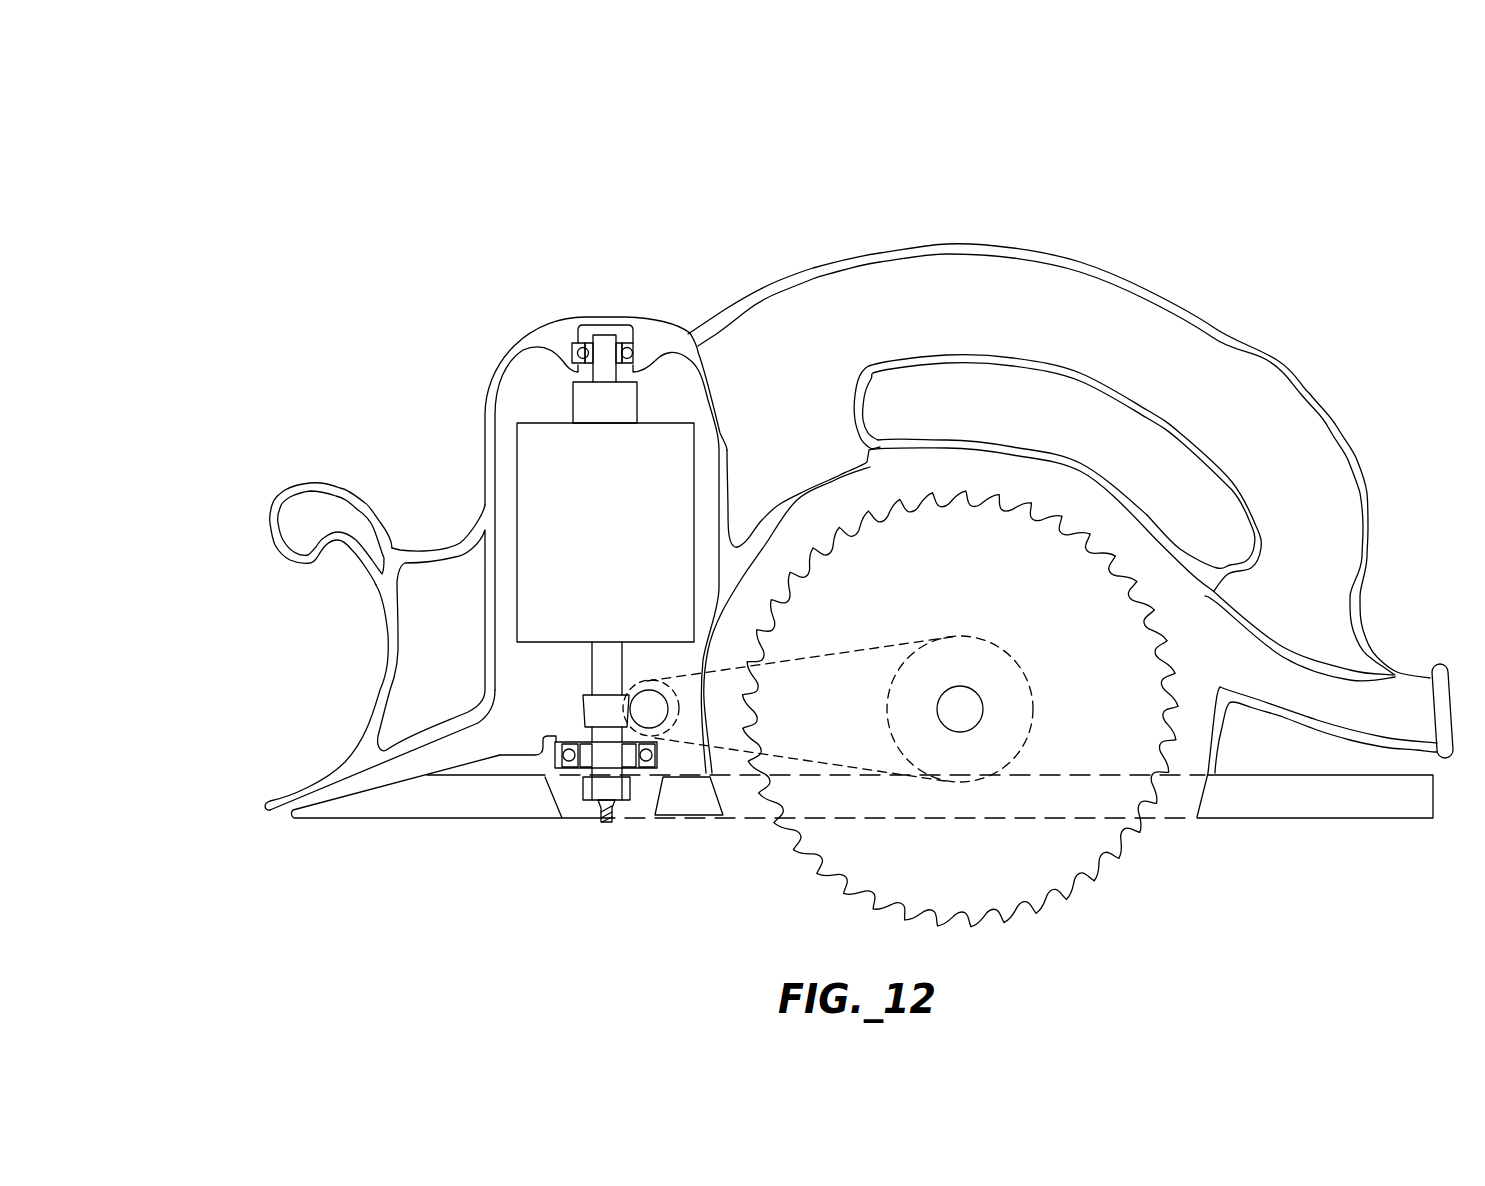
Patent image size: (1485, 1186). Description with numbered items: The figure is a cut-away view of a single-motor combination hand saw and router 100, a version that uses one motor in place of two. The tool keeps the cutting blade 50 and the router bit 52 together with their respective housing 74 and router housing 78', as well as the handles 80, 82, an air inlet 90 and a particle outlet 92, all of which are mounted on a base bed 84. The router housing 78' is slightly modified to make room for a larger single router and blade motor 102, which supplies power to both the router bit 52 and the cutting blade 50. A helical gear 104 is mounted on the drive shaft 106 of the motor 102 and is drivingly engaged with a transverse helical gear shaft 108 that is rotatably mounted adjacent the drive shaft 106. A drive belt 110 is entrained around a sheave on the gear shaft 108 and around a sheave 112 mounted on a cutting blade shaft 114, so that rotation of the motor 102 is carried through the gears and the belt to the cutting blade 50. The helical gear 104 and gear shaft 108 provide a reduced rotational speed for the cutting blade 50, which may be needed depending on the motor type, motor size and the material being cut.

The cutting blade 50 is at (1085, 880).
The router bit 52 is at (604, 833).
The housing 74 is at (1080, 462).
The router housing 78' is at (853, 542).
The handle 80 is at (285, 487).
The handle 82 is at (1189, 296).
The base bed 84 is at (1275, 810).
The air inlet 90 is at (275, 815).
The particle outlet 92 is at (1408, 708).
The hand saw and router 100 is at (768, 262).
The router and blade motor 102 is at (560, 467).
The helical gear 104 is at (580, 707).
The drive shaft 106 is at (623, 678).
The helical gear shaft 108 is at (631, 692).
The drive belt 110 is at (804, 766).
The sheave 112 is at (967, 636).
The cutting blade shaft 114 is at (983, 710).